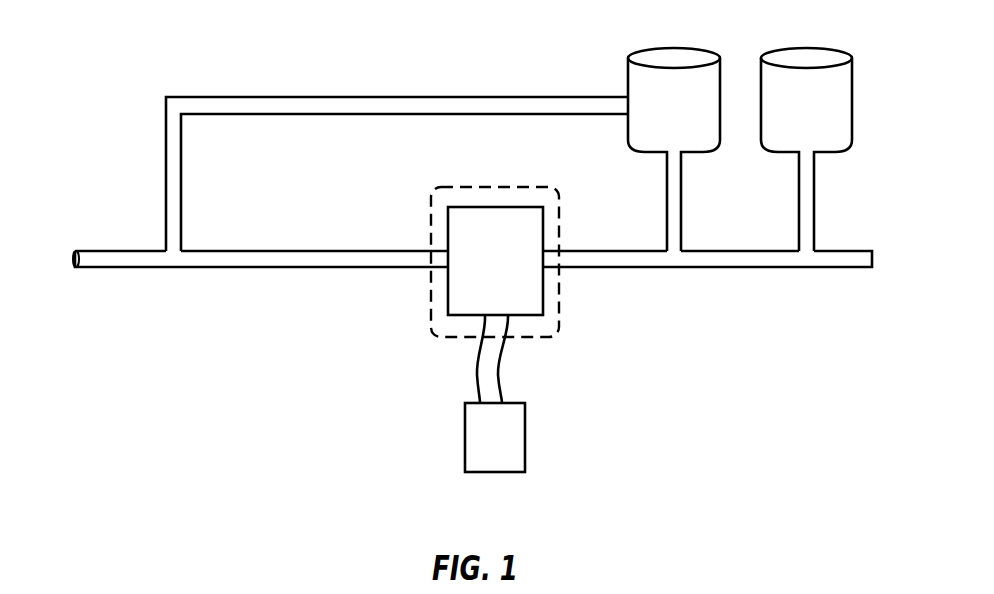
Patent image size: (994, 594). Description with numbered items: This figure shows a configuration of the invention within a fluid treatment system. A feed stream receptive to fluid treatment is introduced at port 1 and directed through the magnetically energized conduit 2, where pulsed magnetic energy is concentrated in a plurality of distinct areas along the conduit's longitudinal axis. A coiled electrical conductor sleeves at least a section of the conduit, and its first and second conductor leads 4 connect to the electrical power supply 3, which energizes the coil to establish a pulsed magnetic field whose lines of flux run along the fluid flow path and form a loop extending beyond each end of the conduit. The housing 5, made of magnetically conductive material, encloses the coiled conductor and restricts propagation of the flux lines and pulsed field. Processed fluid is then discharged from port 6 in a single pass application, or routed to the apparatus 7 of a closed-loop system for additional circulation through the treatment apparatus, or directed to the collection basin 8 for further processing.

The port 1 is at (75, 251).
The magnetically energized conduit 2 is at (485, 276).
The electrical power supply 3 is at (485, 452).
The first and second conductor leads 4 is at (498, 382).
The housing 5 is at (559, 295).
The port 6 is at (873, 252).
The apparatus 7 is at (665, 119).
The collection basin 8 is at (798, 119).